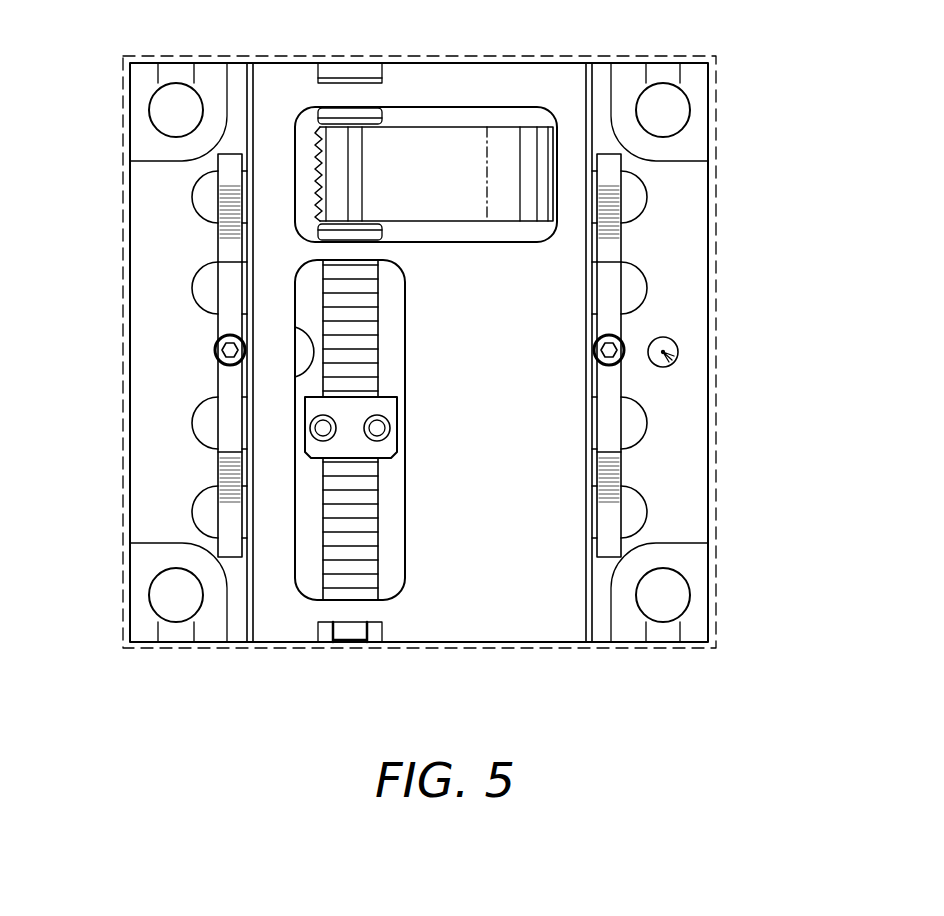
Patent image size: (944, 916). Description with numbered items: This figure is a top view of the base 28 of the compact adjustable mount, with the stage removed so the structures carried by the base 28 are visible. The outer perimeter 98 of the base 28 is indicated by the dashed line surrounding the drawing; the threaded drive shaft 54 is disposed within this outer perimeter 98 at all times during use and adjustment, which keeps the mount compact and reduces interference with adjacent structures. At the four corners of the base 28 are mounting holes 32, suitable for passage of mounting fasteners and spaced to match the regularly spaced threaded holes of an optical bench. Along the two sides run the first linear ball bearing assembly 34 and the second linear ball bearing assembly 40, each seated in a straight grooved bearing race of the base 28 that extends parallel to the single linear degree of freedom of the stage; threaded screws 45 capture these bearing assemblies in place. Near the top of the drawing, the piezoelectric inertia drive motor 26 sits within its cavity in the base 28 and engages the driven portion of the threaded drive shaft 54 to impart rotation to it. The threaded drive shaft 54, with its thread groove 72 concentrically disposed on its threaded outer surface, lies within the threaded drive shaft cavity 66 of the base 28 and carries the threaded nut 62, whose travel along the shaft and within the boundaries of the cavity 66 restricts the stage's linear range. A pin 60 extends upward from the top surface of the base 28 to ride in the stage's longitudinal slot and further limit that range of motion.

The piezoelectric inertia drive motor 26 is at (428, 187).
The base 28 is at (558, 77).
The mounting holes 32 is at (176, 110).
The first linear ball bearing assembly 34 is at (640, 289).
The second linear ball bearing assembly 40 is at (198, 197).
The threaded screws 45 is at (213, 350).
The threaded drive shaft 54 is at (378, 320).
The pin 60 is at (678, 352).
The threaded nut 62 is at (385, 404).
The threaded drive shaft cavity 66 is at (392, 489).
The thread groove 72 is at (378, 547).
The outer perimeter 98 is at (178, 648).